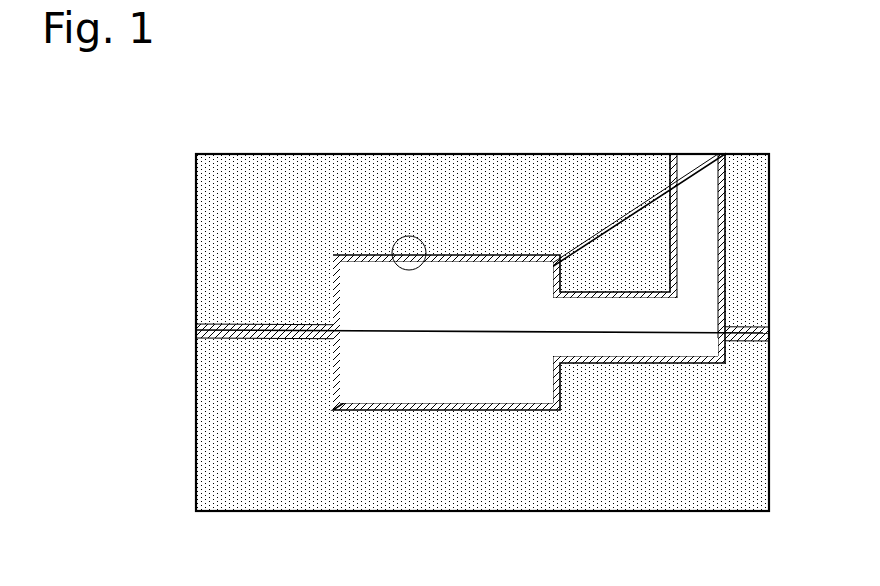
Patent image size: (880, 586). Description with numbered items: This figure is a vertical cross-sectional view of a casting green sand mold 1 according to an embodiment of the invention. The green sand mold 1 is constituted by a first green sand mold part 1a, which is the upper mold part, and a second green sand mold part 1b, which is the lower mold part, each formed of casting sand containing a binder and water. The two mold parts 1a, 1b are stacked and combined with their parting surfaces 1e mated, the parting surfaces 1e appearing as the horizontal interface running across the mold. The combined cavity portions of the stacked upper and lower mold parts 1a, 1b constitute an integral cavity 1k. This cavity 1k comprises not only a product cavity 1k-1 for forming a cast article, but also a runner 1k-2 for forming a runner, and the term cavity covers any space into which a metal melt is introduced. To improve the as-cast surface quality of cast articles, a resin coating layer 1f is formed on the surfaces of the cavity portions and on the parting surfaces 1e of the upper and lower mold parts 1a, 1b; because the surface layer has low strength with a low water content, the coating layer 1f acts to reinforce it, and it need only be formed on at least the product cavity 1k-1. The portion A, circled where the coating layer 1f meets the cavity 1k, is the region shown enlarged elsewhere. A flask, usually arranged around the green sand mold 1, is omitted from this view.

The casting green sand mold 1 is at (451, 324).
The first green sand mold part 1a is at (272, 166).
The second green sand mold part 1b is at (308, 498).
The parting surfaces 1e is at (228, 332).
The resin coating layer 1f is at (525, 262).
The cavity 1k is at (451, 336).
The product cavity 1k-1 is at (476, 321).
The runner 1k-2 is at (635, 327).
The portion A is at (409, 236).